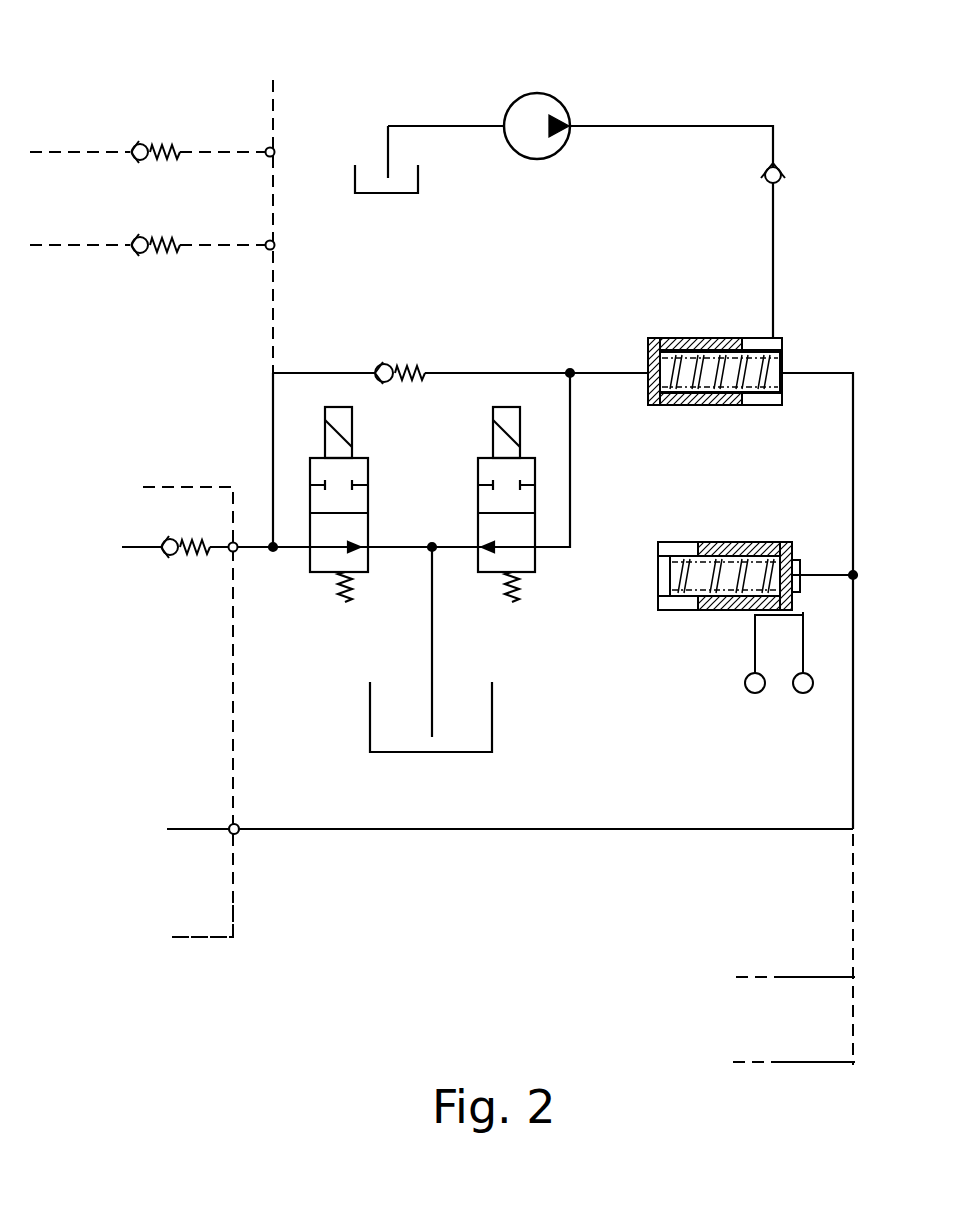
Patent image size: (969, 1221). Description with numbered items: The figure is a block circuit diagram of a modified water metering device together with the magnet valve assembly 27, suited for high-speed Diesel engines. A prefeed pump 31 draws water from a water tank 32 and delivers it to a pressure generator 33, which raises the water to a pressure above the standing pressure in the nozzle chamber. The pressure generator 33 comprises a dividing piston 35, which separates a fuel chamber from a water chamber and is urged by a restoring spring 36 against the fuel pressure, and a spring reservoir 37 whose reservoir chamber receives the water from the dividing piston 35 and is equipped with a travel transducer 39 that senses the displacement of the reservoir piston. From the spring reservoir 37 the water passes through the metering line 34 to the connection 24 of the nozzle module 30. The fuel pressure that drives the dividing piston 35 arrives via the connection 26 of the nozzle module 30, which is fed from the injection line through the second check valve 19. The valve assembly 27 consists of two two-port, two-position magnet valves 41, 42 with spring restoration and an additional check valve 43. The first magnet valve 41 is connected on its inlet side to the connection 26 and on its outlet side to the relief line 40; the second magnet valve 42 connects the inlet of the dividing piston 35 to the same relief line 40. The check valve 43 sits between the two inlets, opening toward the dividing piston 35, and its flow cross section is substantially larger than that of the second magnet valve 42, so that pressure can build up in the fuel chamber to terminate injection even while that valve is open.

The second check valve 19 is at (178, 556).
The connection 24 is at (237, 833).
The connection 26 is at (275, 150).
The magnet valve assembly 27 is at (435, 519).
The nozzle module 30 is at (238, 917).
The prefeed pump 31 is at (540, 108).
The water tank 32 is at (392, 195).
The pressure generator 33 is at (710, 500).
The metering line 34 is at (547, 832).
The dividing piston 35 is at (706, 330).
The restoring spring 36 is at (665, 336).
The spring reservoir 37 is at (716, 532).
The travel transducer 39 is at (773, 676).
The relief line 40 is at (432, 637).
The first magnet valve 41 is at (332, 558).
The second magnet valve 42 is at (533, 560).
The check valve 43 is at (390, 362).